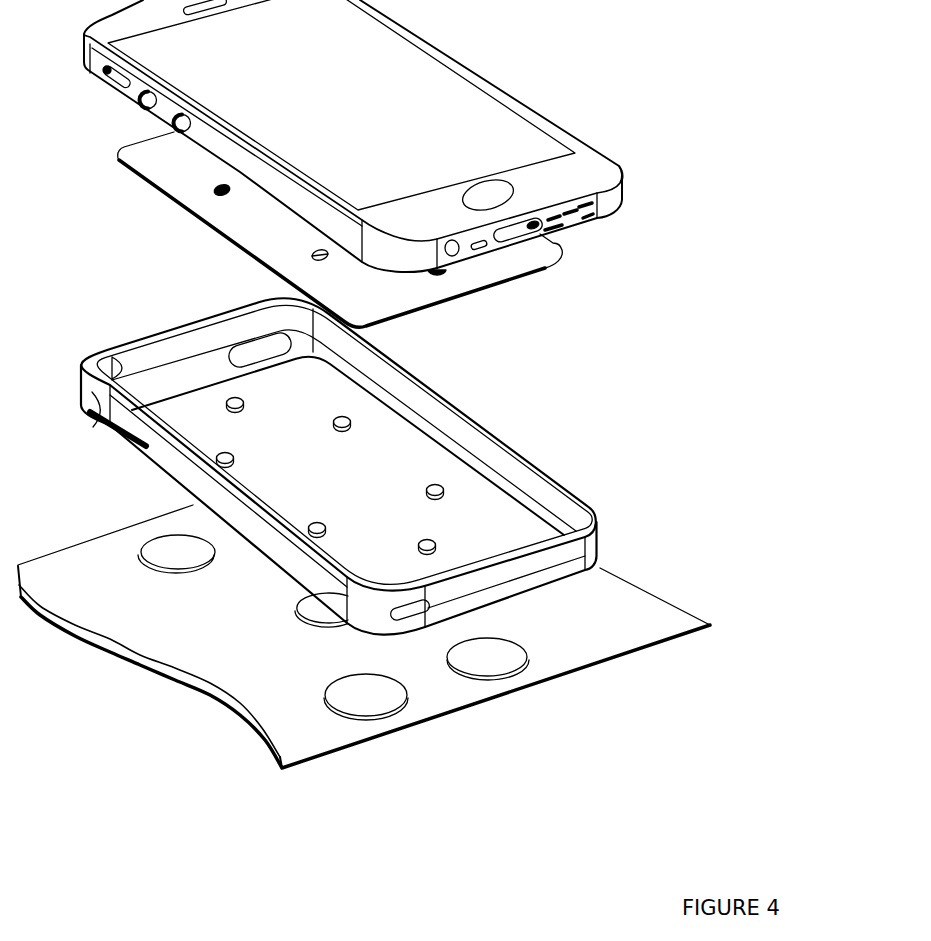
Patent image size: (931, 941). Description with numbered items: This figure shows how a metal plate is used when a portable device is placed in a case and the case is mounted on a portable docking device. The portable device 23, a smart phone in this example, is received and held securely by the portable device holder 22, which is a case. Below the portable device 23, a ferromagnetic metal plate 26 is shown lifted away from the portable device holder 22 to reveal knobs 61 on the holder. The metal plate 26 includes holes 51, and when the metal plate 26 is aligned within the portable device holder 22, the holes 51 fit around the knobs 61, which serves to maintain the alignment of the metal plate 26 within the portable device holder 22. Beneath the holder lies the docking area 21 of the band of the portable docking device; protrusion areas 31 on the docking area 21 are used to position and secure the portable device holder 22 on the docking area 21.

The docking area 21 is at (680, 600).
The portable device holder 22 is at (572, 494).
The portable device 23 is at (587, 147).
The metal plate 26 is at (507, 262).
The protrusion areas 31 is at (375, 694).
The holes 51 is at (421, 277).
The knobs 61 is at (420, 539).